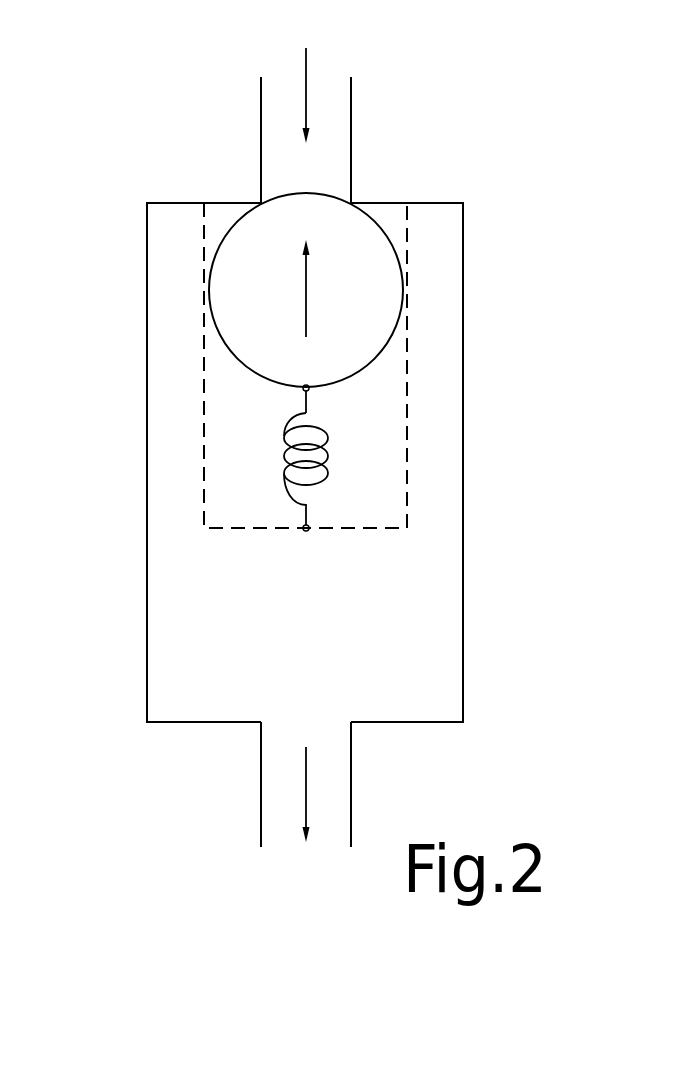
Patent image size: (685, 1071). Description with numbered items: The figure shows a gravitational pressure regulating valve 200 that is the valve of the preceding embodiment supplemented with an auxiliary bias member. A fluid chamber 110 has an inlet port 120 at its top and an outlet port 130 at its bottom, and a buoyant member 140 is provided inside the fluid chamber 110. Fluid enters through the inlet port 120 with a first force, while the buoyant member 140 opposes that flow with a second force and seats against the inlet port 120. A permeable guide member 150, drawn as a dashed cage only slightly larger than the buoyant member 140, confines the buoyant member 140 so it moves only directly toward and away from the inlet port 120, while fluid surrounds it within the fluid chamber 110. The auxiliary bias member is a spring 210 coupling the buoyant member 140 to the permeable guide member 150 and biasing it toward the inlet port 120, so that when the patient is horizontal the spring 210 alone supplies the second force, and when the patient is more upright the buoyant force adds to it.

The gravitational pressure regulating valve with auxiliary bias member 200 is at (134, 185).
The fluid chamber 110 is at (442, 410).
The inlet port 120 is at (328, 167).
The outlet port 130 is at (328, 733).
The buoyant member 140 is at (342, 381).
The permeable guide member 150 is at (233, 529).
The spring 210 is at (284, 436).